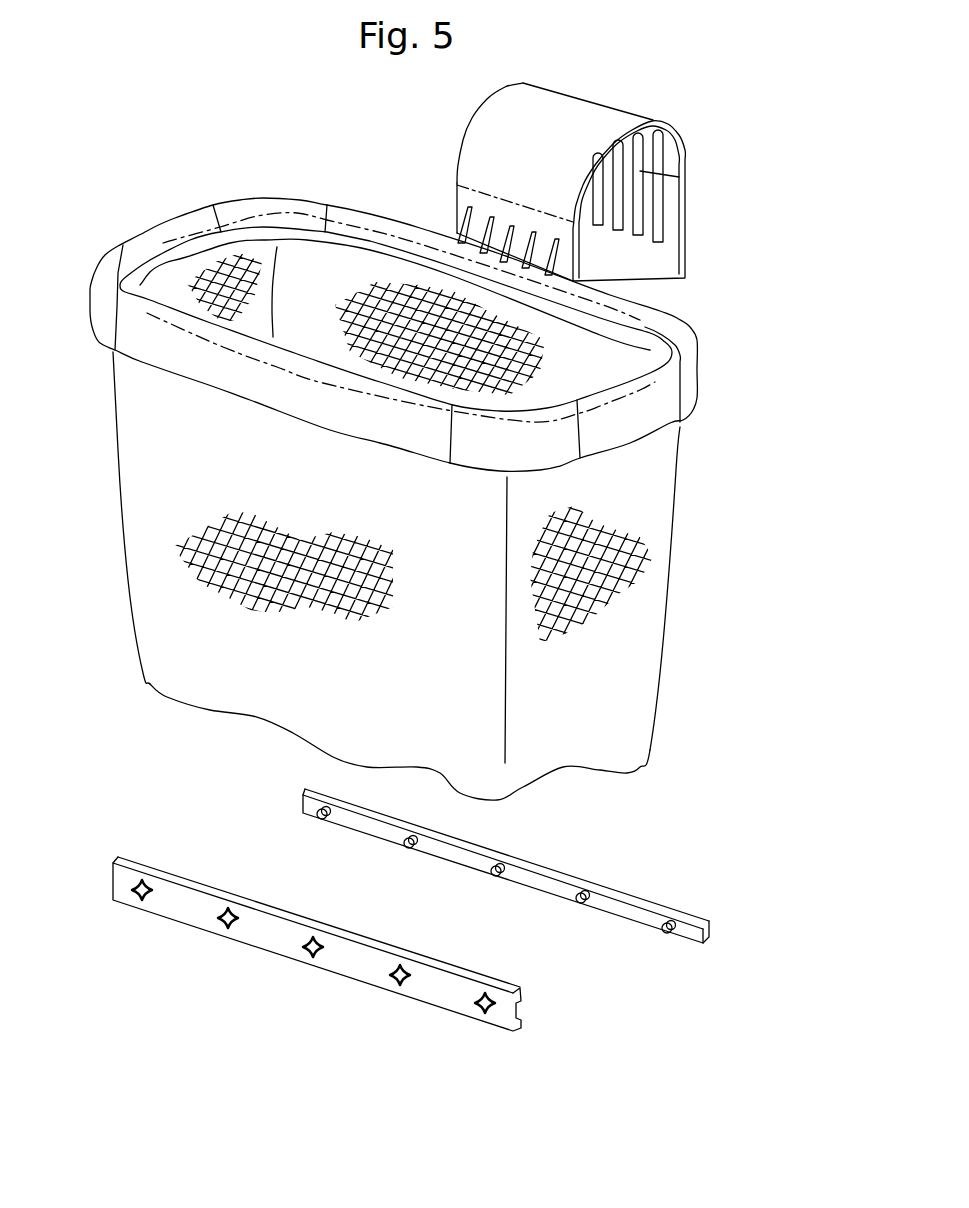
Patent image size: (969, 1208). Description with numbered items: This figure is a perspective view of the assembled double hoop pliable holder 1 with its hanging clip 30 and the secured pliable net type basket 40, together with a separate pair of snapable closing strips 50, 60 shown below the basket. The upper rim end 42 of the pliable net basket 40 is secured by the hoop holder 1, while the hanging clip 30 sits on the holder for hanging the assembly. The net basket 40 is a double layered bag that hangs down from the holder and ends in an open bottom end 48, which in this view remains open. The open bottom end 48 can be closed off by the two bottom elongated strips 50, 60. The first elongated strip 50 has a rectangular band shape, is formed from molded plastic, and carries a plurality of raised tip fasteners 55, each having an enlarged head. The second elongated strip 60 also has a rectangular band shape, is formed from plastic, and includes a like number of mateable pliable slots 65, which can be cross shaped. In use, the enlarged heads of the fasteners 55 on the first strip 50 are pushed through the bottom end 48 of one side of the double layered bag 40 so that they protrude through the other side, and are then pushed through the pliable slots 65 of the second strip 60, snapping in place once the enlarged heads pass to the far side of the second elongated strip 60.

The double hoop pliable holder 1 is at (130, 206).
The hanging clip 30 is at (574, 172).
The pliable net type basket 40 is at (712, 478).
The upper rim end 42 is at (463, 338).
The open bottom end 48 is at (464, 742).
The first elongated strip 50 is at (506, 892).
The raised tip fasteners 55 is at (667, 930).
The second elongated strip 60 is at (317, 956).
The pliable slots 65 is at (397, 985).